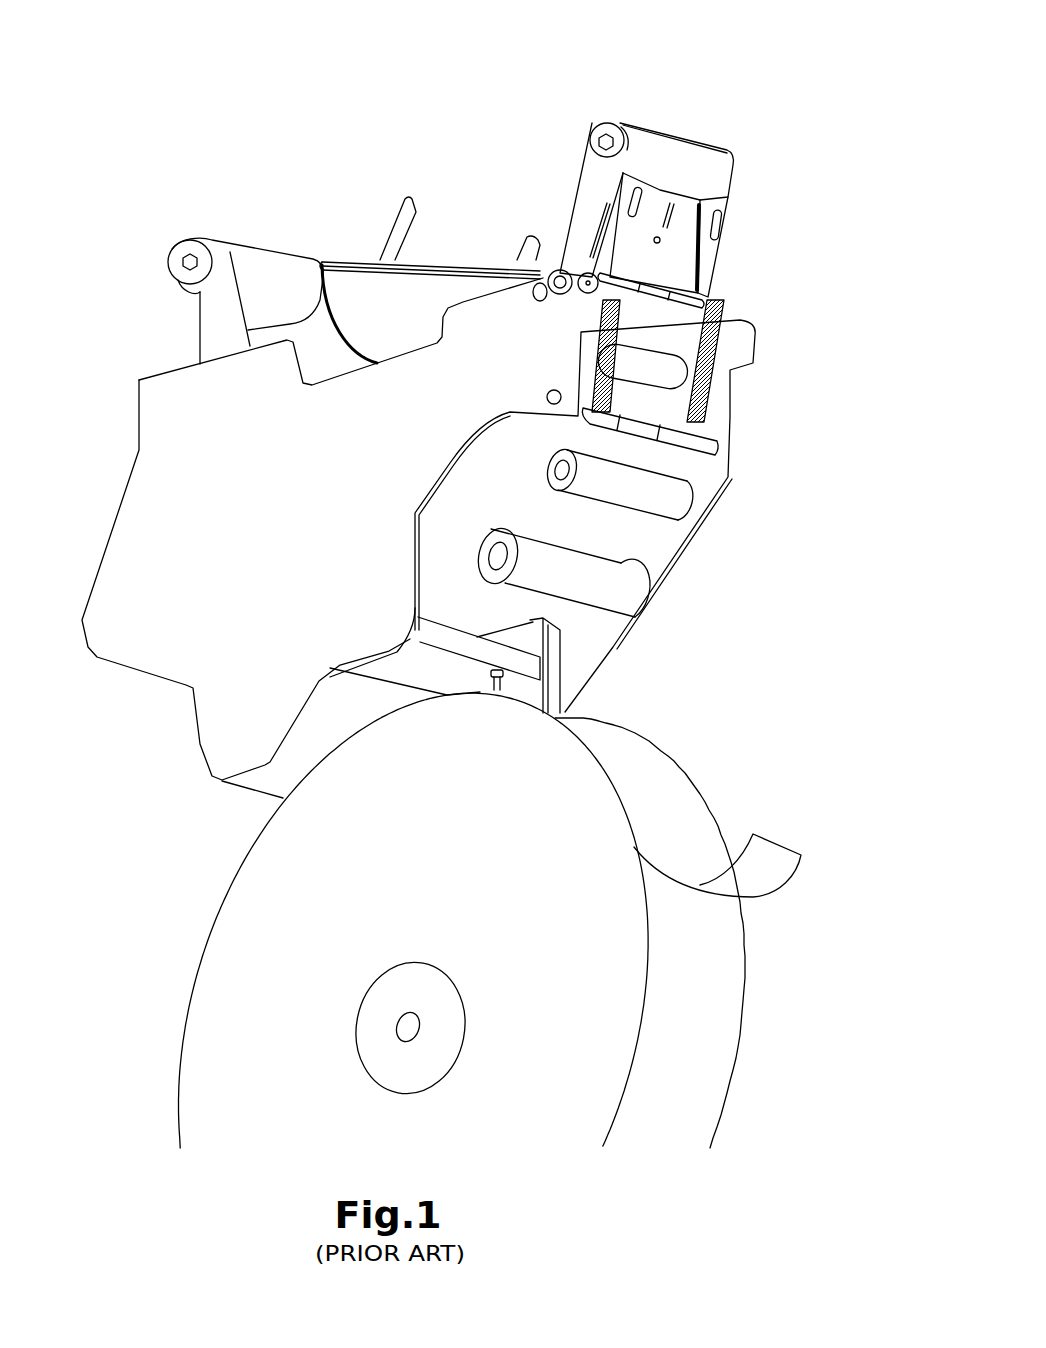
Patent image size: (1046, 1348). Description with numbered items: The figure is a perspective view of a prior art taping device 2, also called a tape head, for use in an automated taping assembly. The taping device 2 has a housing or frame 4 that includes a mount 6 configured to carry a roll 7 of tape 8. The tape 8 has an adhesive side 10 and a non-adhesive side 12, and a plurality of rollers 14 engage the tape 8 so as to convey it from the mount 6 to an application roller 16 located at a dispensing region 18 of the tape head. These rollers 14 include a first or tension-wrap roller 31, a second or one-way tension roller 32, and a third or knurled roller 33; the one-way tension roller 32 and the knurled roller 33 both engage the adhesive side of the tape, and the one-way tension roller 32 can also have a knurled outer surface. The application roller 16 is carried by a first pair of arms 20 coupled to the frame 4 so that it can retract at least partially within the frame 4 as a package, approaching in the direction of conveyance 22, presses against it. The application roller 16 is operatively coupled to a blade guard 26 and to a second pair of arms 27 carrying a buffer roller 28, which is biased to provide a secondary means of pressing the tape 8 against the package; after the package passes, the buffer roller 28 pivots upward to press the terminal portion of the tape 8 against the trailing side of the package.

The taping device 2 is at (144, 737).
The frame 4 is at (197, 490).
The mount 6 is at (364, 1008).
The roll 7 is at (414, 920).
The tape 8 is at (745, 1003).
The adhesive side 10 is at (762, 870).
The non-adhesive side 12 is at (660, 803).
The plurality of rollers 14 is at (703, 175).
The application roller 16 is at (670, 153).
The dispensing region 18 is at (577, 77).
The first pair of arms 20 is at (590, 227).
The direction of conveyance 22 is at (787, 107).
The blade guard 26 is at (392, 241).
The second pair of arms 27 is at (333, 363).
The buffer roller 28 is at (262, 268).
The tension-wrap roller 31 is at (618, 483).
The one-way tension roller 32 is at (561, 570).
The knurled roller 33 is at (677, 380).